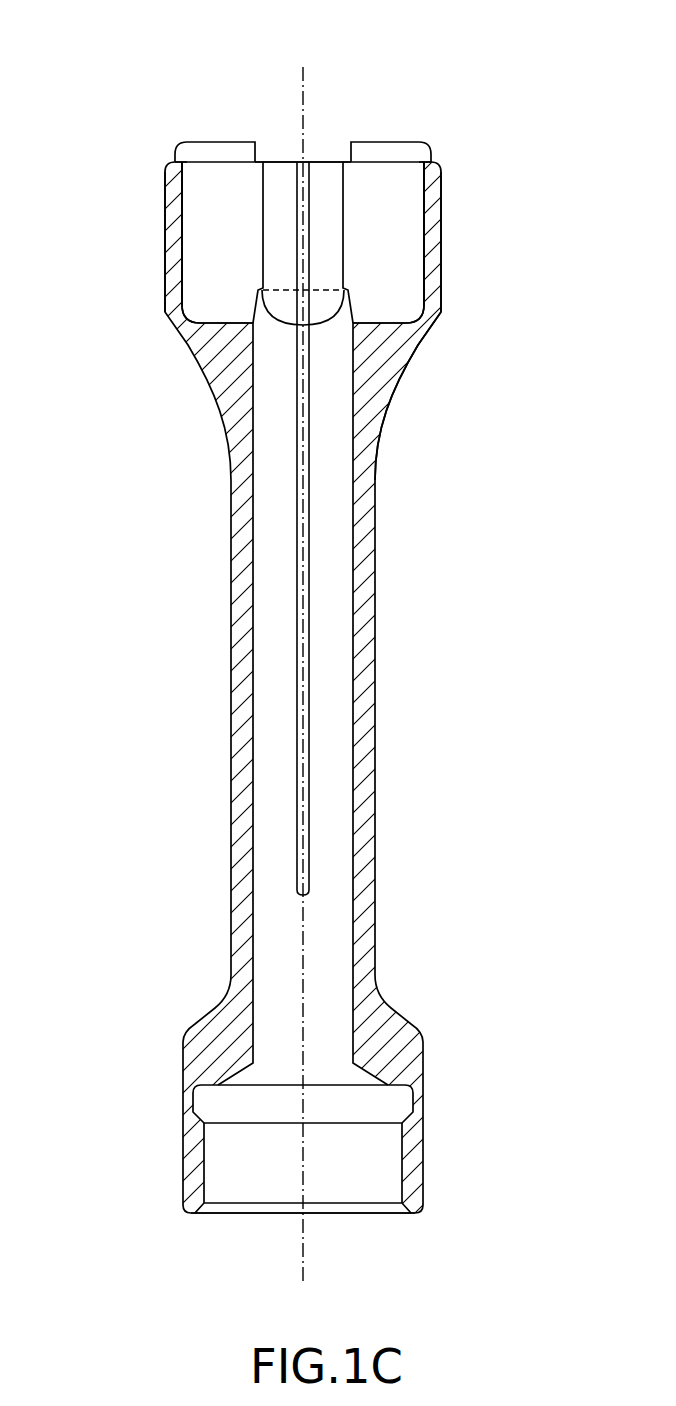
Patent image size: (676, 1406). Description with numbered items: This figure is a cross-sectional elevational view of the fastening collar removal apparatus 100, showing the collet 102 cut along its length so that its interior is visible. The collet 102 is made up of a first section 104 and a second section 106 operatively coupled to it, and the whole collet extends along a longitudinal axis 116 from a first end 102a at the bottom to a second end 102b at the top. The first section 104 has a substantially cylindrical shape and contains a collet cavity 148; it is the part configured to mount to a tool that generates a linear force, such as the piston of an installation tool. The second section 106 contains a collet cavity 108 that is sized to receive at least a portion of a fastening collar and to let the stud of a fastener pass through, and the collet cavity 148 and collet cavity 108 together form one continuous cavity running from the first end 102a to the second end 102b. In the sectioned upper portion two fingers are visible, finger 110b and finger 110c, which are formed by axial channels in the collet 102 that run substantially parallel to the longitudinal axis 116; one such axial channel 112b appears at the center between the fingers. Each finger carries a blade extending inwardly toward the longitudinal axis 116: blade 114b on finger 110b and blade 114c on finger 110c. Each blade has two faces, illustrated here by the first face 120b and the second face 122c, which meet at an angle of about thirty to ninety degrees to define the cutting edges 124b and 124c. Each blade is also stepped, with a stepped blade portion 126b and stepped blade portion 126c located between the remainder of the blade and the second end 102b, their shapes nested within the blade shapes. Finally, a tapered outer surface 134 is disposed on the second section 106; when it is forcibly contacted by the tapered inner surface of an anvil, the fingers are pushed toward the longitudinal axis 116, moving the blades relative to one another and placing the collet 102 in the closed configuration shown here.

The fastening collar removal apparatus 100 is at (560, 72).
The collet 102 is at (367, 665).
The first end of the collet 102a is at (423, 1210).
The second end of the collet 102b is at (433, 162).
The first section 104 is at (86, 907).
The second section 106 is at (86, 895).
The collet cavity 108 is at (327, 658).
The finger 110b is at (175, 215).
The finger 110c is at (440, 242).
The axial channel 112b is at (305, 173).
The blade 114b is at (240, 187).
The blade 114c is at (370, 203).
The longitudinal axis 116 is at (303, 1242).
The first face 120b is at (240, 245).
The second face 122c is at (370, 223).
The cutting edge 124b is at (257, 208).
The cutting edge 124c is at (342, 215).
The stepped blade portion 126b is at (223, 142).
The stepped blade portion 126c is at (392, 152).
The tapered outer surface 134 is at (430, 333).
The collet cavity 148 is at (343, 1152).